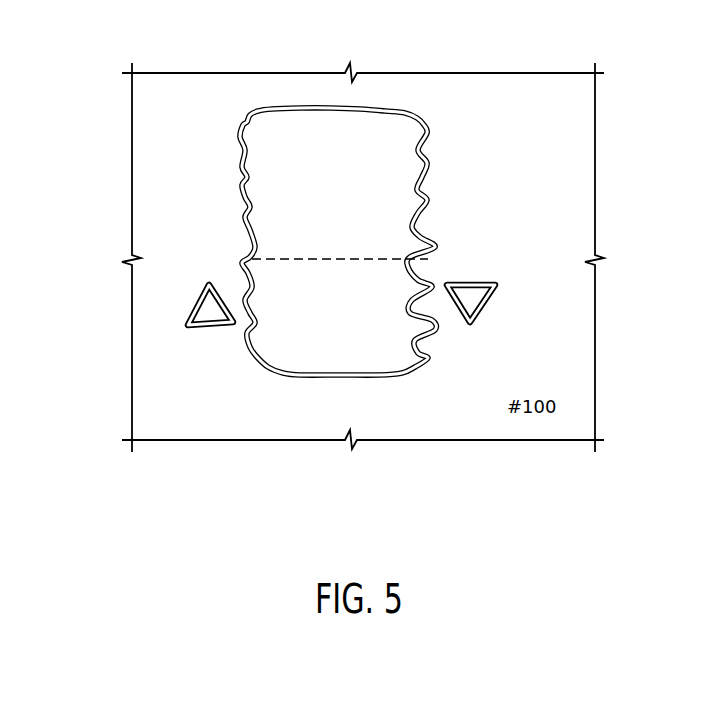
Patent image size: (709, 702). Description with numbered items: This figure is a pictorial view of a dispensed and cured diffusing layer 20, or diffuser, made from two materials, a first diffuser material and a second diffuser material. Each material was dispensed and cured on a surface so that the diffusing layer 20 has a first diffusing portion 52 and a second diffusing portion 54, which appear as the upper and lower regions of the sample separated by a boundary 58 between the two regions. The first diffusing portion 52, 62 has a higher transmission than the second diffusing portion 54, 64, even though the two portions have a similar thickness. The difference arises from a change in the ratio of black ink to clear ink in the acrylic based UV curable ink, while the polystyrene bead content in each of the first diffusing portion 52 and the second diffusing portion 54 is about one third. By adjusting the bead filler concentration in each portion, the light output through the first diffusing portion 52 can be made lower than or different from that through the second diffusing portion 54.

The diffusing layer 20 is at (348, 198).
The first diffusing portion 52 is at (448, 200).
The first portion of particle 62 is at (370, 163).
The second diffusing portion 54 is at (173, 320).
The second portion of particle 64 is at (307, 300).
The interface between portions 58 is at (288, 258).